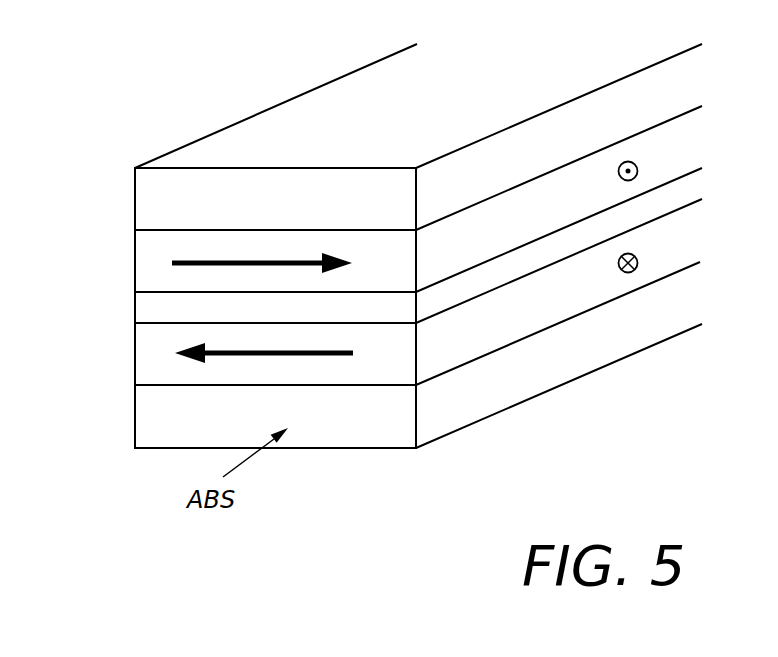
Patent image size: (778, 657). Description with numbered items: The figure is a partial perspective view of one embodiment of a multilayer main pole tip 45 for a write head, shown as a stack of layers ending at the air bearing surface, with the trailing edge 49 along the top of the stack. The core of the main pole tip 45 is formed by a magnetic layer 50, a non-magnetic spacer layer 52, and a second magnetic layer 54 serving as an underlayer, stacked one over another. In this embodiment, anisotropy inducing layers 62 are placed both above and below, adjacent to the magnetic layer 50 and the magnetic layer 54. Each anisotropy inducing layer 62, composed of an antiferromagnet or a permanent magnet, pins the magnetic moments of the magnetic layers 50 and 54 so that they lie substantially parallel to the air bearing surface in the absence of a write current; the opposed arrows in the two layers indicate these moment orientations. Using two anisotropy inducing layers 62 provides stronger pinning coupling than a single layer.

The main pole tip 45 is at (111, 521).
The trailing edge 49 is at (230, 168).
The magnetic layer 50 is at (145, 258).
The non-magnetic spacer layer 52 is at (148, 305).
The magnetic layer 54 is at (145, 357).
The anisotropy inducing layer 62 is at (153, 195).